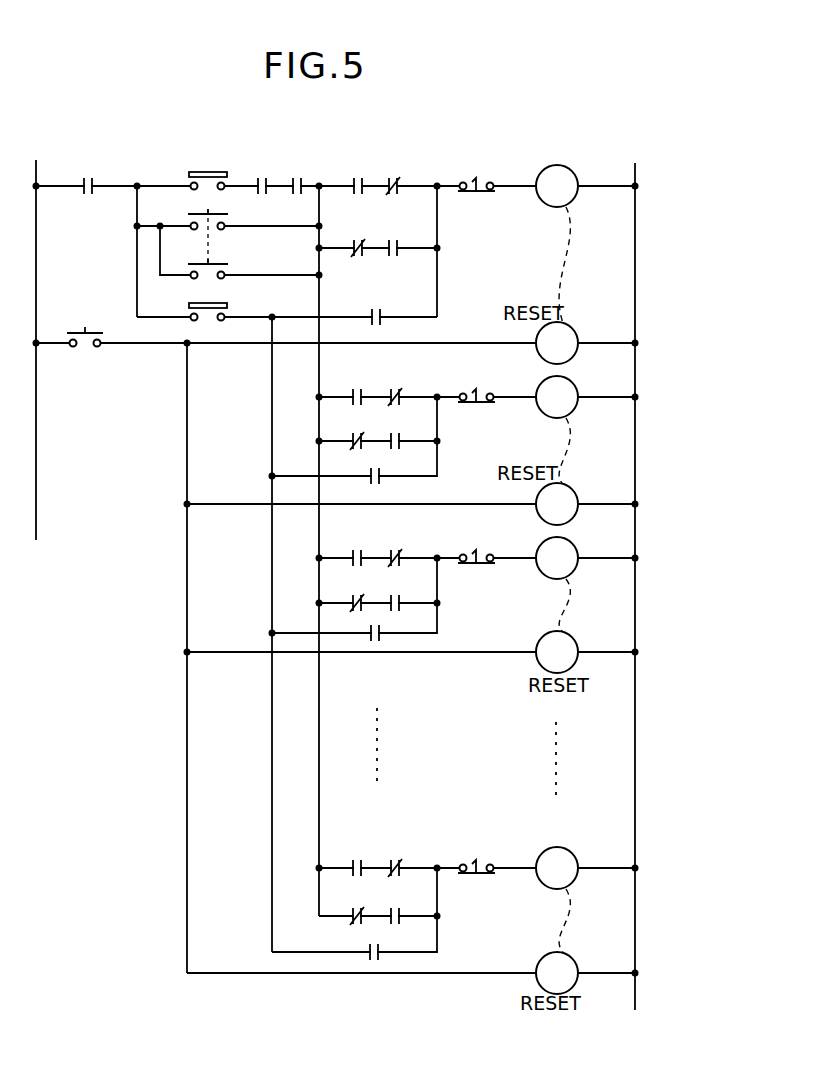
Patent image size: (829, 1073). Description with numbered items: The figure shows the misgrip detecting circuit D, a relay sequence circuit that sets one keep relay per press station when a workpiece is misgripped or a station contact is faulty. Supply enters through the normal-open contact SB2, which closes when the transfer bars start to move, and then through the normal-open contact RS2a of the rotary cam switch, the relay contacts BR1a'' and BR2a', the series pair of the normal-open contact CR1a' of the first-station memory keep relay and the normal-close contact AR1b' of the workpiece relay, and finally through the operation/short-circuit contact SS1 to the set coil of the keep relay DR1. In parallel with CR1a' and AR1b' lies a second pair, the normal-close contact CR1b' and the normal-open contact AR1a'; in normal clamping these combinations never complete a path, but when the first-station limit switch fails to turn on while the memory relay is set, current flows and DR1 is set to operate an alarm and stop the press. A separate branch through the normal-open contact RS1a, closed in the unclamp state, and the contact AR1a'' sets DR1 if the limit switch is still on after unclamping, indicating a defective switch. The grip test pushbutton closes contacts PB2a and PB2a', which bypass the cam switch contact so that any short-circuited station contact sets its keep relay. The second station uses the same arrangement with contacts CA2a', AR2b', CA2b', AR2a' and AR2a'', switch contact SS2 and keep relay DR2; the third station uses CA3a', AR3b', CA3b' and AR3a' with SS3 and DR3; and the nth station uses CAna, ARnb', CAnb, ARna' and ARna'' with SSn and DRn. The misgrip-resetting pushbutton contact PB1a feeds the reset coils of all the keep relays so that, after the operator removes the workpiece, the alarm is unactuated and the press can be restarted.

The normal-open contact SB2 is at (89, 175).
The normal-open contact of contact RS2 RS2a is at (207, 164).
The contact of relay BR1 BR1a'' is at (261, 162).
The contact of relay BR2 BR2a' is at (316, 162).
The normal-open contact of keep relay CR1 CR1a' is at (372, 162).
The normal-close contact of relay AR1 AR1b' is at (417, 162).
The normal-close contact of operation/short-circuit switch SS1 is at (481, 169).
The keep relay DR1 is at (566, 160).
The grip test pushbutton contact PB2a is at (237, 233).
The grip test pushbutton contact PB2a' is at (239, 264).
The normal-close contact of keep relay CR1 CR1b' is at (352, 233).
The normal-open contact of relay AR1 AR1a' is at (409, 233).
The normal-open contact of contact RS1 RS1a is at (230, 303).
The contact of relay AR1 AR1a'' is at (381, 301).
The misgrip-resetting pushbutton contact PB1a is at (88, 322).
The contact of keep relay CA2 CA2a' is at (354, 383).
The normal-close contact of relay AR2 AR2b' is at (414, 384).
The contact of keep relay CA2 CA2b' is at (347, 428).
The normal-open contact of relay AR2 AR2a' is at (406, 428).
The contact of relay AR2 AR2a'' is at (406, 545).
The normal-close contact of operation/short-circuit switch SS2 is at (480, 405).
The keep relay DR2 is at (573, 384).
The contact of keep relay CA3 CA3a' is at (354, 544).
The normal-close contact of relay AR3 AR3b' is at (414, 544).
The contact of keep relay CA3 CA3b' is at (347, 590).
The normal-open contact of relay AR3 AR3a' is at (406, 590).
The normal-close contact of operation/short-circuit switch SS3 is at (480, 566).
The keep relay DR3 is at (573, 545).
The contact of keep relay CAn CAna is at (357, 854).
The normal-close contact of relay ARn ARnb' is at (412, 850).
The contact of keep relay CAn CAnb is at (354, 907).
The normal-open contact of relay ARn ARna' is at (407, 901).
The contact of relay ARn ARna'' is at (402, 943).
The normal-close contact of operation/short-circuit switch SSn is at (478, 876).
The keep relay DRn is at (568, 850).
The misgrip detecting circuit D is at (681, 330).